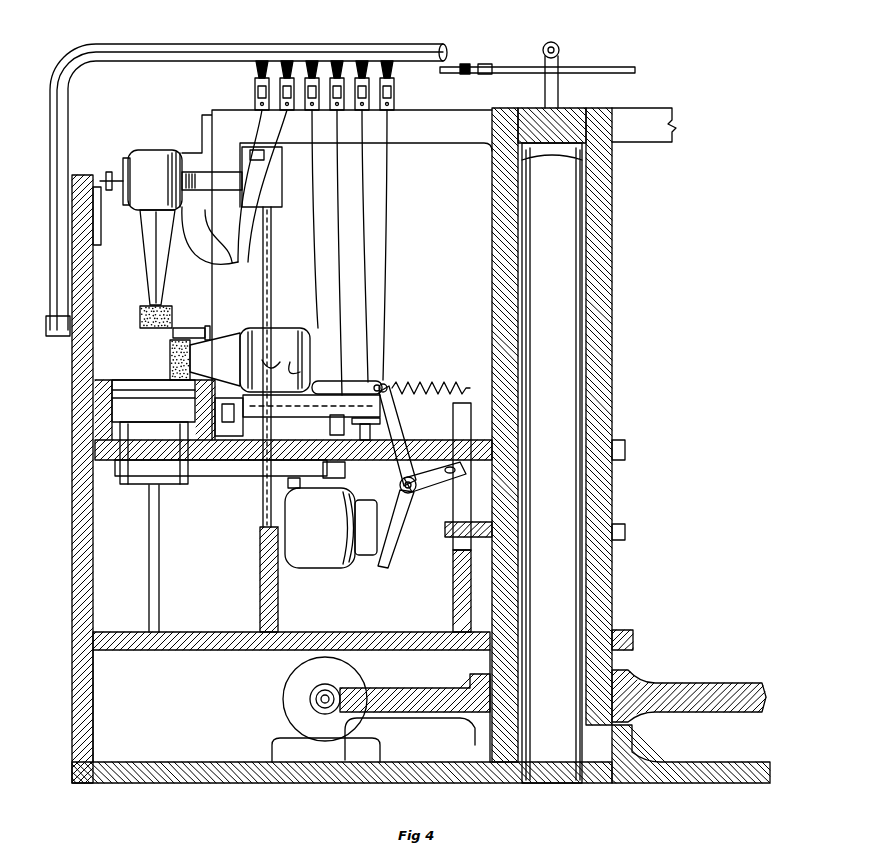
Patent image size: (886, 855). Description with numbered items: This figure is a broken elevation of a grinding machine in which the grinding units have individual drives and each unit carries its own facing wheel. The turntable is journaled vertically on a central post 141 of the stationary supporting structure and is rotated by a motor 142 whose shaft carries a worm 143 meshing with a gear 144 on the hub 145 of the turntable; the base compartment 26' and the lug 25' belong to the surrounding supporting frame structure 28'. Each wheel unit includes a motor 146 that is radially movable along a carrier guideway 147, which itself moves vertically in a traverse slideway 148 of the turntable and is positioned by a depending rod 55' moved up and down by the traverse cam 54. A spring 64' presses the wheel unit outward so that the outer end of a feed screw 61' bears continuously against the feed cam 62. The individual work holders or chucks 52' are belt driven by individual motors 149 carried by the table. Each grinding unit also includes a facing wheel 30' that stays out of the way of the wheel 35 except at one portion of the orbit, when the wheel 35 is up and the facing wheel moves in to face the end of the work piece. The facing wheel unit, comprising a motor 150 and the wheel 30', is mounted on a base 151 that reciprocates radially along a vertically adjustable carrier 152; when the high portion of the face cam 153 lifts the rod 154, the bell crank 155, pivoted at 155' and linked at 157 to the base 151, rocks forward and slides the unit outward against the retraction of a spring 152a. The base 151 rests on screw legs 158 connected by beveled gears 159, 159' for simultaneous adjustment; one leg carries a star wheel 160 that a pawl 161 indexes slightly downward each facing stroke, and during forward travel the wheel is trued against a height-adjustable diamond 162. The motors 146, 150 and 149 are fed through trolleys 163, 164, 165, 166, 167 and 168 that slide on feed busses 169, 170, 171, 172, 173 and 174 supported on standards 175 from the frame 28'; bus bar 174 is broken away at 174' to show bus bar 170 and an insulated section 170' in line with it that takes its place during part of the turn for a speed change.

The standards 175 is at (205, 44).
The feed buss 169 is at (262, 61).
The feed buss 170 is at (384, 140).
The feed buss 171 is at (313, 61).
The trolley 165 is at (322, 84).
The feed buss 172 is at (340, 61).
The trolley 166 is at (350, 84).
The feed buss 173 is at (365, 61).
The feed buss 174 is at (507, 196).
The broken-away portion of bus bar 174' is at (473, 56).
The insulated bus bar section 170' is at (508, 52).
The trolley 163 is at (258, 90).
The trolley 164 is at (283, 96).
The trolley 167 is at (366, 92).
The trolley 168 is at (390, 96).
The motor 146 is at (152, 180).
The feed screw 61' is at (106, 167).
The feed cam 62 is at (93, 212).
The carrier guideway 147 is at (140, 215).
The wheel 35 is at (140, 315).
The spring 64' is at (212, 181).
The traverse slideway 148 is at (232, 266).
The depending rod 55' is at (267, 337).
The facing wheel 30' is at (186, 356).
The diamond 162 is at (240, 378).
The motor 150 is at (275, 360).
The base 151 is at (340, 395).
The beveled gear 159' is at (331, 375).
The carrier 152 is at (380, 383).
The spring 152a is at (431, 372).
The bell crank 155 is at (408, 438).
The rod 154 is at (460, 505).
The pivot 155' is at (405, 529).
The beveled gear 159 is at (278, 417).
The link 157 is at (366, 429).
The star wheel 160 is at (342, 470).
The pawl 161 is at (286, 487).
The screw legs 158 is at (232, 476).
The work holder or chuck 52' is at (153, 506).
The traverse cam 54 is at (262, 545).
The face cam 153 is at (453, 572).
The motor 149 is at (331, 528).
The hub 145 is at (492, 255).
The central post 141 is at (580, 405).
The lug 25' is at (639, 435).
The supporting frame structure 28' is at (401, 479).
The base compartment 26' is at (288, 697).
The motor 142 is at (292, 698).
The worm 143 is at (315, 710).
The gear 144 is at (355, 674).